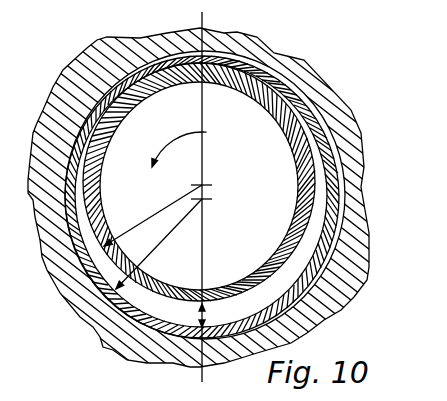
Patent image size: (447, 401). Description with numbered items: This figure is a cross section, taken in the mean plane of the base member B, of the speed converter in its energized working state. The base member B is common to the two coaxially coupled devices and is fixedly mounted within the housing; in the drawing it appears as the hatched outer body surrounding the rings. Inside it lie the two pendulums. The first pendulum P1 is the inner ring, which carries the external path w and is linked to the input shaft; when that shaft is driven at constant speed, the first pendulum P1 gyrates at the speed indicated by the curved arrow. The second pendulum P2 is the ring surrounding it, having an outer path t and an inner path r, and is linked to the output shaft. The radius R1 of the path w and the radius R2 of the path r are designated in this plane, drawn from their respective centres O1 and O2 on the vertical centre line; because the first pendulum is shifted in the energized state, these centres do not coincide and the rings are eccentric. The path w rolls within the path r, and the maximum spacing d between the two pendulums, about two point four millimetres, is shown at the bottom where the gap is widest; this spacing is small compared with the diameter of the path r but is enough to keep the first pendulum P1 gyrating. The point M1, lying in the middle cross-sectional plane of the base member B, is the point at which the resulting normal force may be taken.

The base member B is at (100, 53).
The point M1 is at (240, 33).
The first pendulum P1 is at (306, 153).
The second pendulum P2 is at (295, 98).
The radius of path w R1 is at (153, 215).
The radius of path r R2 is at (159, 244).
The maximum spacing between the two pendulums d is at (207, 315).
The center of inner ring O1 is at (212, 178).
The center of outer ring and housing O2 is at (218, 206).